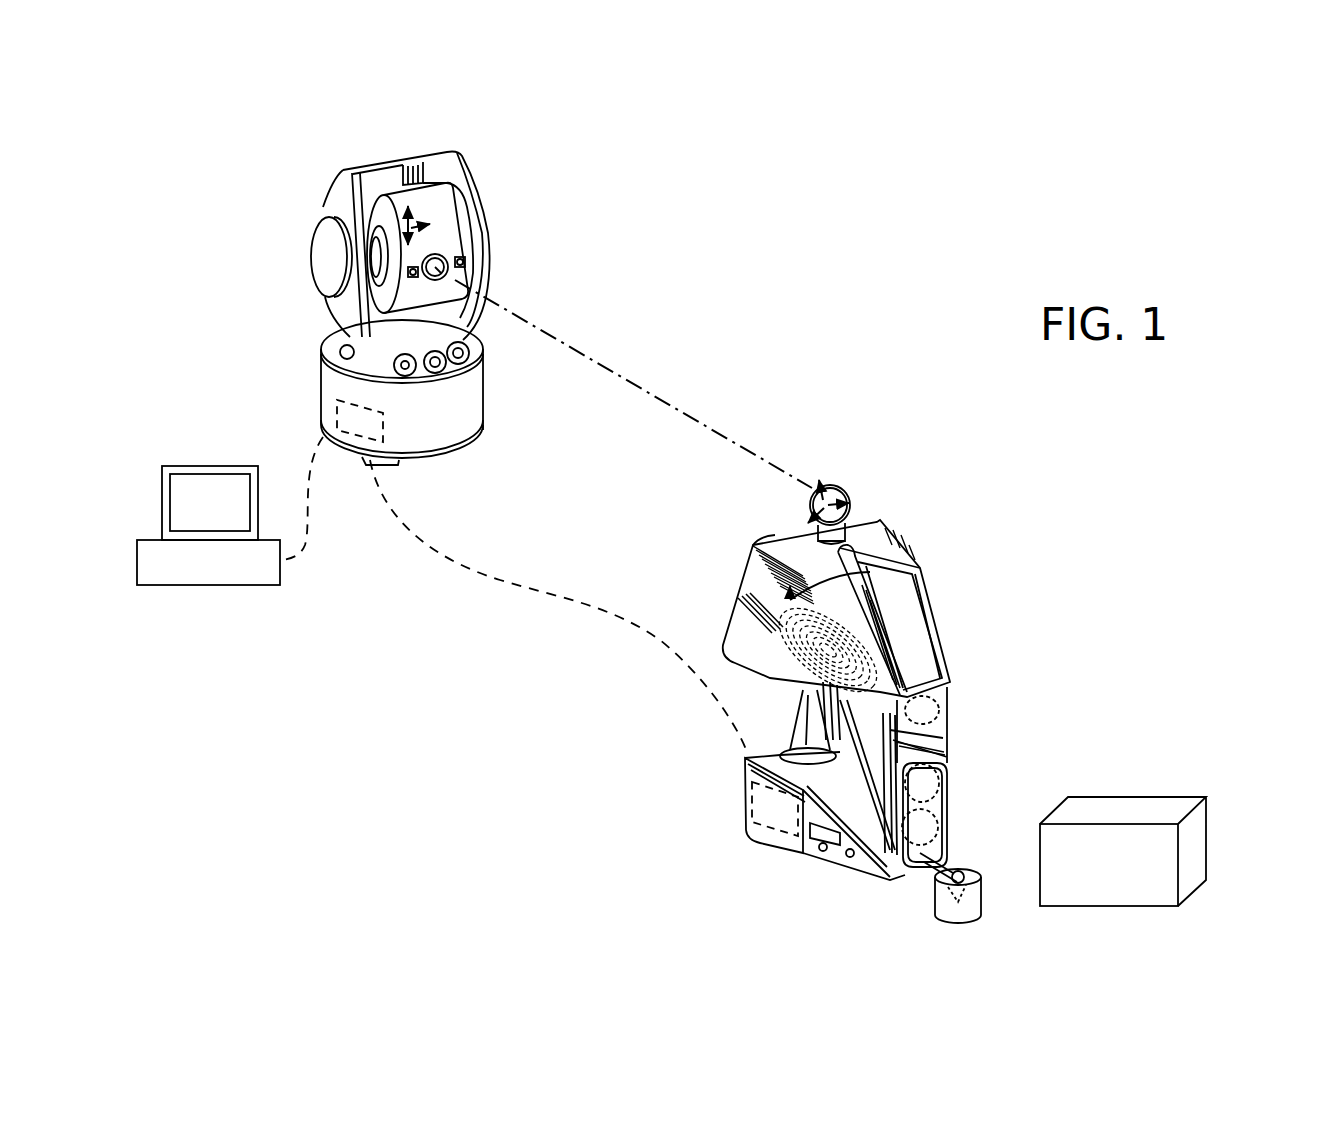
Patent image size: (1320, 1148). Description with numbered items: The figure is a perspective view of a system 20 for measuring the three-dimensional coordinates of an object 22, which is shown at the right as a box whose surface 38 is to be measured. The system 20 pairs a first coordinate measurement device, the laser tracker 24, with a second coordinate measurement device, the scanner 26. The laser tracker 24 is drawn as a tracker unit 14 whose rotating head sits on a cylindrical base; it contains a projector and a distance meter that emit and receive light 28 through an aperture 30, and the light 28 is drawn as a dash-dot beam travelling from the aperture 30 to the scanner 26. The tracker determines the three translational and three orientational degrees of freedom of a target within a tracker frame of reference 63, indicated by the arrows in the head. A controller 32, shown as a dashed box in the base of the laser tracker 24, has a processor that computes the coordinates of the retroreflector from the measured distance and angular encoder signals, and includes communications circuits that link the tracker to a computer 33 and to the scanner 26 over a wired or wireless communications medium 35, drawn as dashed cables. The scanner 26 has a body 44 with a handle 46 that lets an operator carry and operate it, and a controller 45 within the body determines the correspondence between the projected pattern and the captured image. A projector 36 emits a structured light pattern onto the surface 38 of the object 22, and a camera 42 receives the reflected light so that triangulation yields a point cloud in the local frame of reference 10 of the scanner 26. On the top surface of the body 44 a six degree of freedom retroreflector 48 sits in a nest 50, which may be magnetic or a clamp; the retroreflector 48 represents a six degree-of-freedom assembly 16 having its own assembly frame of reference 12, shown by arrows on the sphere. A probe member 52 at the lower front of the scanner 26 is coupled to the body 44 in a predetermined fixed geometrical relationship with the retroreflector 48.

The local frame of reference 10 is at (777, 601).
The assembly frame of reference 12 is at (832, 438).
The laser tracker 14 is at (492, 187).
The 6DOF assembly 16 is at (957, 457).
The system 20 is at (831, 333).
The object 22 is at (1155, 762).
The laser tracker 24 is at (279, 209).
The scanner 26 is at (943, 657).
The light 28 is at (604, 362).
The aperture 30 is at (451, 250).
The controller 32 is at (337, 406).
The computer 33 is at (220, 585).
The communications medium 35 is at (548, 588).
The projector 36 is at (913, 830).
The surface 38 is at (1150, 808).
The camera 42 is at (922, 708).
The body 44 is at (775, 625).
The controller 45 is at (747, 803).
The handle 46 is at (803, 712).
The six degree of freedom retroreflector 48 is at (850, 490).
The nest 50 is at (817, 535).
The probe member 52 is at (955, 857).
The tracker frame of reference 63 is at (405, 225).